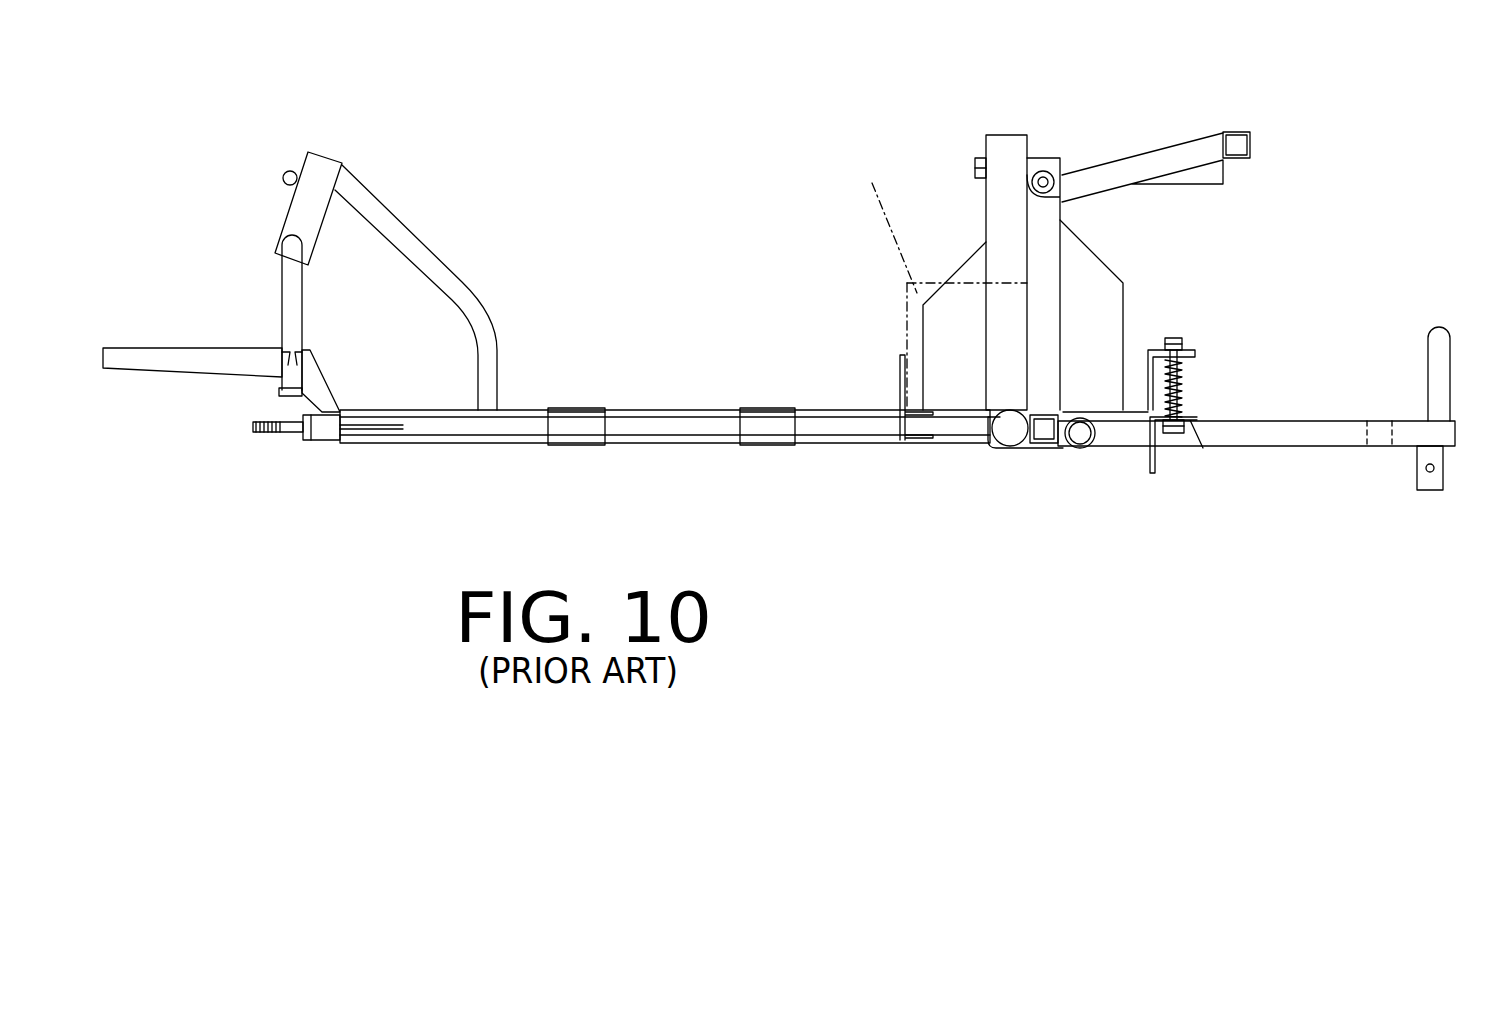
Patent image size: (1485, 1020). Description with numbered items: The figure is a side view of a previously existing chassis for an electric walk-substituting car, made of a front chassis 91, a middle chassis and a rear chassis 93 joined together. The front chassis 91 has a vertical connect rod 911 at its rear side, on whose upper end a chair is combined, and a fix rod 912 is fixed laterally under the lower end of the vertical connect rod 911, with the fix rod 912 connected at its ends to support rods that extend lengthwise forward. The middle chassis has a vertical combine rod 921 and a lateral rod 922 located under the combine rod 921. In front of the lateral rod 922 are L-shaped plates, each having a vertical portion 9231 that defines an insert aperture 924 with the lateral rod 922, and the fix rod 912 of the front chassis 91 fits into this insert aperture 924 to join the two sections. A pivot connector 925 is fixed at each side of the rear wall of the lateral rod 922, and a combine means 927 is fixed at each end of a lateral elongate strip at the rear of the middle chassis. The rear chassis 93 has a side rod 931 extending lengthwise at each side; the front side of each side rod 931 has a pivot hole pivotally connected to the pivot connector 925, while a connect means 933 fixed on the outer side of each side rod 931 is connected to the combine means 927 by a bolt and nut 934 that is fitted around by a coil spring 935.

The front chassis 91 is at (803, 448).
The vertical connect rod 911 is at (1008, 153).
The vertical combine rod 921 is at (1042, 210).
The fix rod 912 is at (1005, 437).
The vertical portion 9231 is at (983, 447).
The lateral rod 922 is at (1047, 445).
The insert aperture 924 is at (1040, 437).
The pivot connector 925 is at (1075, 447).
The combine means 927 is at (1108, 407).
The bolt and nut 934 is at (1177, 338).
The coil spring 935 is at (1182, 397).
The connect means 933 is at (1185, 432).
The side rod 931 is at (1123, 437).
The rear chassis 93 is at (1353, 453).